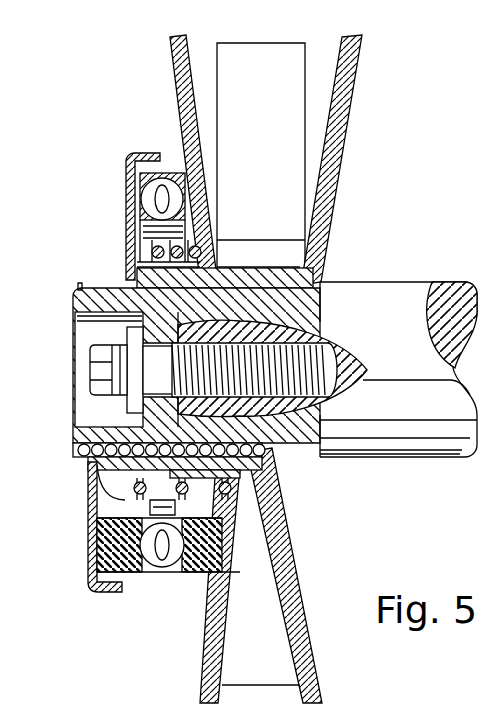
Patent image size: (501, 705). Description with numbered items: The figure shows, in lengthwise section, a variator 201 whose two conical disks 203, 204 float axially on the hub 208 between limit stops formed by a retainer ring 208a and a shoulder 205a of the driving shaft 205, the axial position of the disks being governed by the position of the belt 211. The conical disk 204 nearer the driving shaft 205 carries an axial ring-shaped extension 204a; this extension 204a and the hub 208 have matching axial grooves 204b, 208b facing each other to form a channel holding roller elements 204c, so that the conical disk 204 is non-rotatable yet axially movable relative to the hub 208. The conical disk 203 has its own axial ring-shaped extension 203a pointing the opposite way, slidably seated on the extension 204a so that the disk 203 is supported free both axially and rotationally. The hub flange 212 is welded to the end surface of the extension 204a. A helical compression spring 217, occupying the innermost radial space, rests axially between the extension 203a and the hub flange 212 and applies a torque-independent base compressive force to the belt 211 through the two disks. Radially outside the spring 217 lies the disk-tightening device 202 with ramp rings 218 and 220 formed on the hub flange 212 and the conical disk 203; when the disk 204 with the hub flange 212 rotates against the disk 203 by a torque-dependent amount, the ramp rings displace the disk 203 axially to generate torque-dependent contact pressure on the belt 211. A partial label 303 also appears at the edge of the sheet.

The variator 201 is at (398, 98).
The disk-tightening device 202 is at (155, 577).
The conical disk 203 is at (177, 74).
The axial ring-shaped extension 203a is at (130, 258).
The conical disk 204 is at (285, 548).
The axial ring-shaped extension 204a is at (240, 283).
The axial groove 204b is at (262, 462).
The roller elements 204c is at (130, 498).
The driving shaft 205 is at (400, 300).
The shoulder 205a is at (322, 282).
The hub 208 is at (103, 296).
The retainer ring 208a is at (83, 452).
The axial groove 208b is at (262, 447).
The belt 211 is at (250, 43).
The hub flange 212 is at (128, 183).
The helical compression spring 217 is at (137, 490).
The ramp ring 218 is at (100, 556).
The ramp ring 220 is at (193, 573).
The blade 303 is at (500, 698).